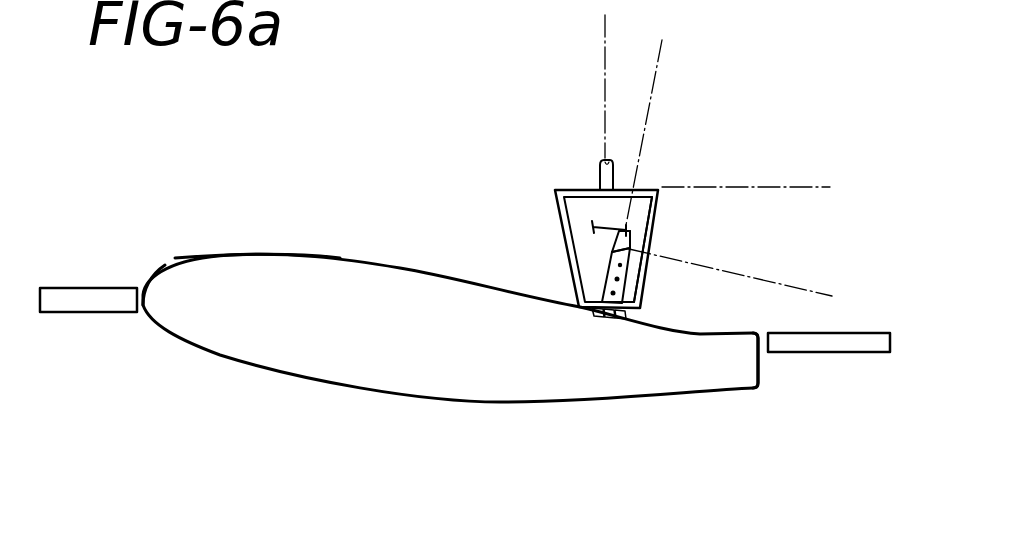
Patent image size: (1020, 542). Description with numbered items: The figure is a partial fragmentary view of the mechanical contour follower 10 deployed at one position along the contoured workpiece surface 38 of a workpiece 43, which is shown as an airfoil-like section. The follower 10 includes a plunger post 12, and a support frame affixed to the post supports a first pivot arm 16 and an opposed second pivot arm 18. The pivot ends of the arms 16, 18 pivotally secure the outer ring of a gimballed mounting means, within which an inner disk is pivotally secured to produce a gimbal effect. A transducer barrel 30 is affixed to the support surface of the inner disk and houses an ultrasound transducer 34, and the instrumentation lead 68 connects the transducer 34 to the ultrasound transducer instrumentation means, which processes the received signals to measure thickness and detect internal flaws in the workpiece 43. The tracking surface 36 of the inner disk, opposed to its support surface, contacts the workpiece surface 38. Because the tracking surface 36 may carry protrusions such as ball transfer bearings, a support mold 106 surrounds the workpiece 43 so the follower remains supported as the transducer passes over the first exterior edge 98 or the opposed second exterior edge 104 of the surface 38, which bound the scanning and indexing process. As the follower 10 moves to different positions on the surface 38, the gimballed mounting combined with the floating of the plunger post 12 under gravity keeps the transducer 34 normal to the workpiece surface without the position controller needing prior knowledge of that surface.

The mechanical contour follower 10 is at (522, 148).
The plunger post 12 is at (611, 175).
The first pivot arm 16 is at (554, 218).
The second pivot arm 18 is at (658, 218).
The transducer barrel 30 is at (608, 260).
The ultrasound transducer 34 is at (631, 241).
The tracking surface 36 is at (630, 313).
The workpiece surface 38 is at (287, 253).
The workpiece 43 is at (408, 348).
The instrumentation lead 68 is at (597, 222).
The first exterior edge 98 is at (763, 368).
The second exterior edge 104 is at (143, 287).
The support mold 106 is at (97, 297).